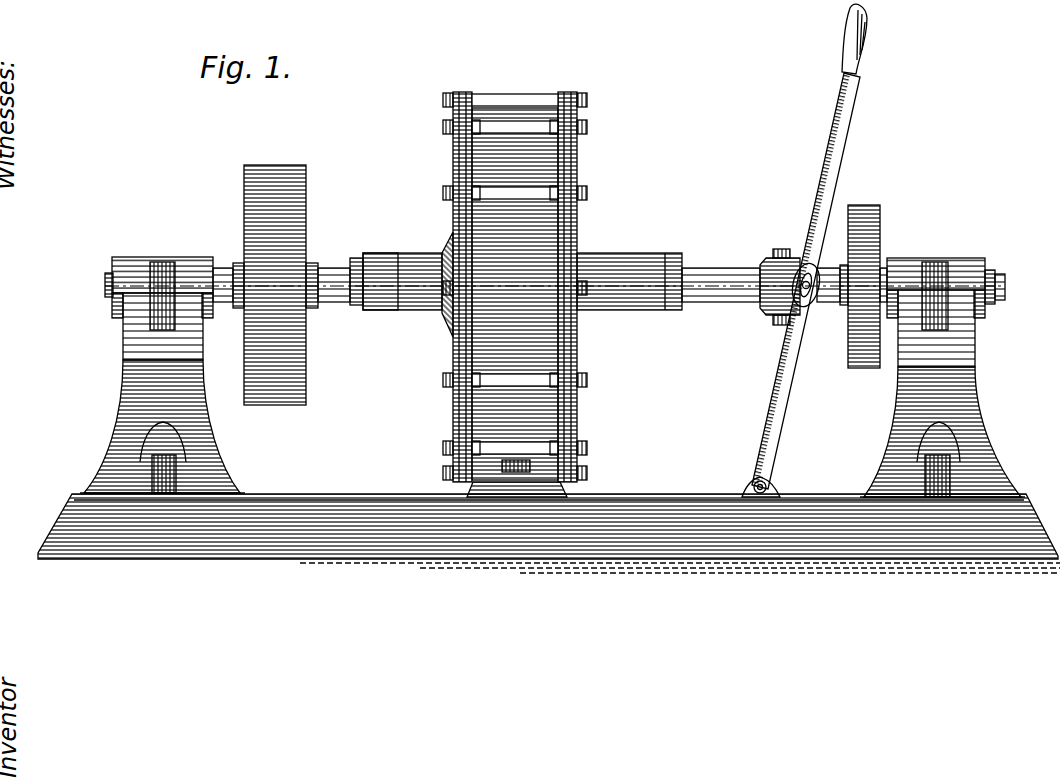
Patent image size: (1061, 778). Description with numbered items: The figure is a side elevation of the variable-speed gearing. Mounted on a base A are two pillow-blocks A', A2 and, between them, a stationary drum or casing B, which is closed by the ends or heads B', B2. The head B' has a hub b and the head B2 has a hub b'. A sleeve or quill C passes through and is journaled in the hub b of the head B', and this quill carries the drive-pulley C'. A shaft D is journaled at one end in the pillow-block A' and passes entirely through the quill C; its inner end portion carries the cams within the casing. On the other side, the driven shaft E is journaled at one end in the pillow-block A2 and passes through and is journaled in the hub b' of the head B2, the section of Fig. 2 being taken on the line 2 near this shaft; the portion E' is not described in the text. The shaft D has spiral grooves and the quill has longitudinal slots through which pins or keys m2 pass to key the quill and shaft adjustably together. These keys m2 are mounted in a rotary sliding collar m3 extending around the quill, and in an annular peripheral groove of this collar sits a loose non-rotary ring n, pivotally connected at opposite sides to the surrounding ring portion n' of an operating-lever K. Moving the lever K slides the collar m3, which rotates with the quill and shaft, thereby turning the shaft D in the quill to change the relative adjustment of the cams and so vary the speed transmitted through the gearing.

The base A is at (549, 512).
The pillow-block A' is at (942, 377).
The pillow-block A2 is at (133, 403).
The stationary drum or casing B is at (515, 275).
The head of the casing B' is at (592, 287).
The head of the casing B2 is at (460, 176).
The hub of the head B' b is at (629, 263).
The hub of the head B2 b' is at (396, 263).
The section line 2 is at (380, 281).
The sleeve or quill C is at (784, 265).
The drive-pulley C' is at (867, 262).
The shaft D is at (1002, 282).
The driven shaft E is at (148, 264).
The shaft section E' is at (336, 260).
The operating-lever K is at (835, 135).
The pins or keys m2 is at (767, 382).
The rotary sliding collar m3 is at (778, 307).
The loose non-rotary ring n is at (812, 318).
The ring portion of the operating-lever n' is at (799, 259).